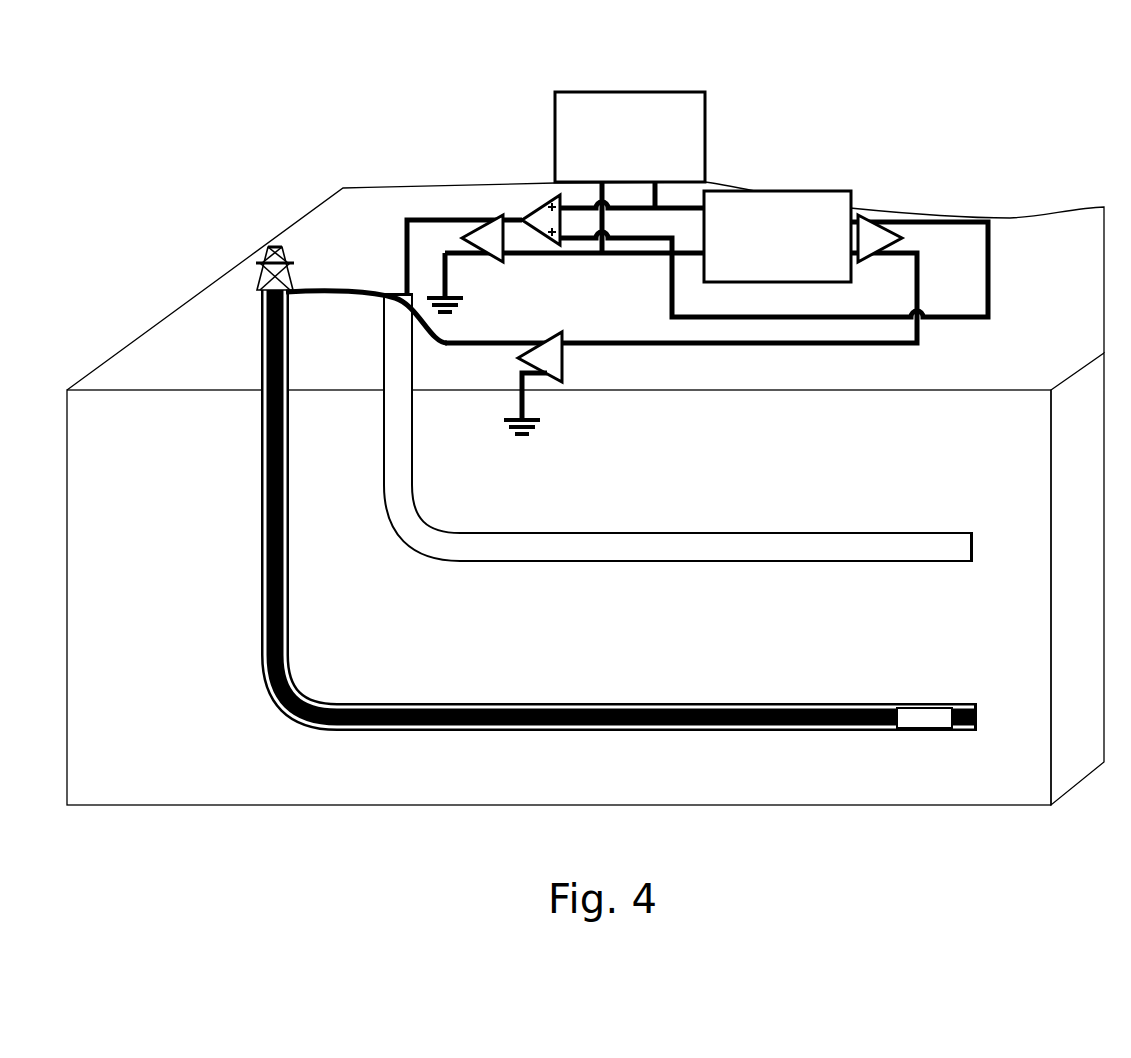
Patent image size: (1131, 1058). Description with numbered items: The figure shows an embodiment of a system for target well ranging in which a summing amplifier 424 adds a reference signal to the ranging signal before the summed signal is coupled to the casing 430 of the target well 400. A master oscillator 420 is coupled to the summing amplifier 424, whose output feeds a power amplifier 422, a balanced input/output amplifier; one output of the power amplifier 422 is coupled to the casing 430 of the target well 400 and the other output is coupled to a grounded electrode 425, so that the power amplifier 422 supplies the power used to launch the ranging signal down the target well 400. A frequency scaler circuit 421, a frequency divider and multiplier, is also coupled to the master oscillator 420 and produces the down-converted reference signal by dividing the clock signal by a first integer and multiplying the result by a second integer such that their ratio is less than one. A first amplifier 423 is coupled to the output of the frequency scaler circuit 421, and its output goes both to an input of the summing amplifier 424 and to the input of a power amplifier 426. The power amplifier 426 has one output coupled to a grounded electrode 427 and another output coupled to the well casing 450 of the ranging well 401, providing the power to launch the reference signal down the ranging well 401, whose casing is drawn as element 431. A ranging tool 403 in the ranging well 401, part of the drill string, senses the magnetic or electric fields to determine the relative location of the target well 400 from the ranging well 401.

The target well 400 is at (850, 530).
The ranging well 401 is at (620, 702).
The ranging tool 403 is at (925, 720).
The master oscillator 420 is at (628, 92).
The frequency scaler circuit 421 is at (822, 191).
The power amplifier 422 is at (480, 215).
The first amplifier 423 is at (865, 215).
The summing amplifier 424 is at (556, 197).
The grounded electrode 425 is at (447, 296).
The power amplifier 426 is at (562, 335).
The grounded electrode 427 is at (524, 417).
The casing 430 is at (385, 368).
The ranging well casing 431 is at (258, 380).
The well casing 450 is at (290, 283).